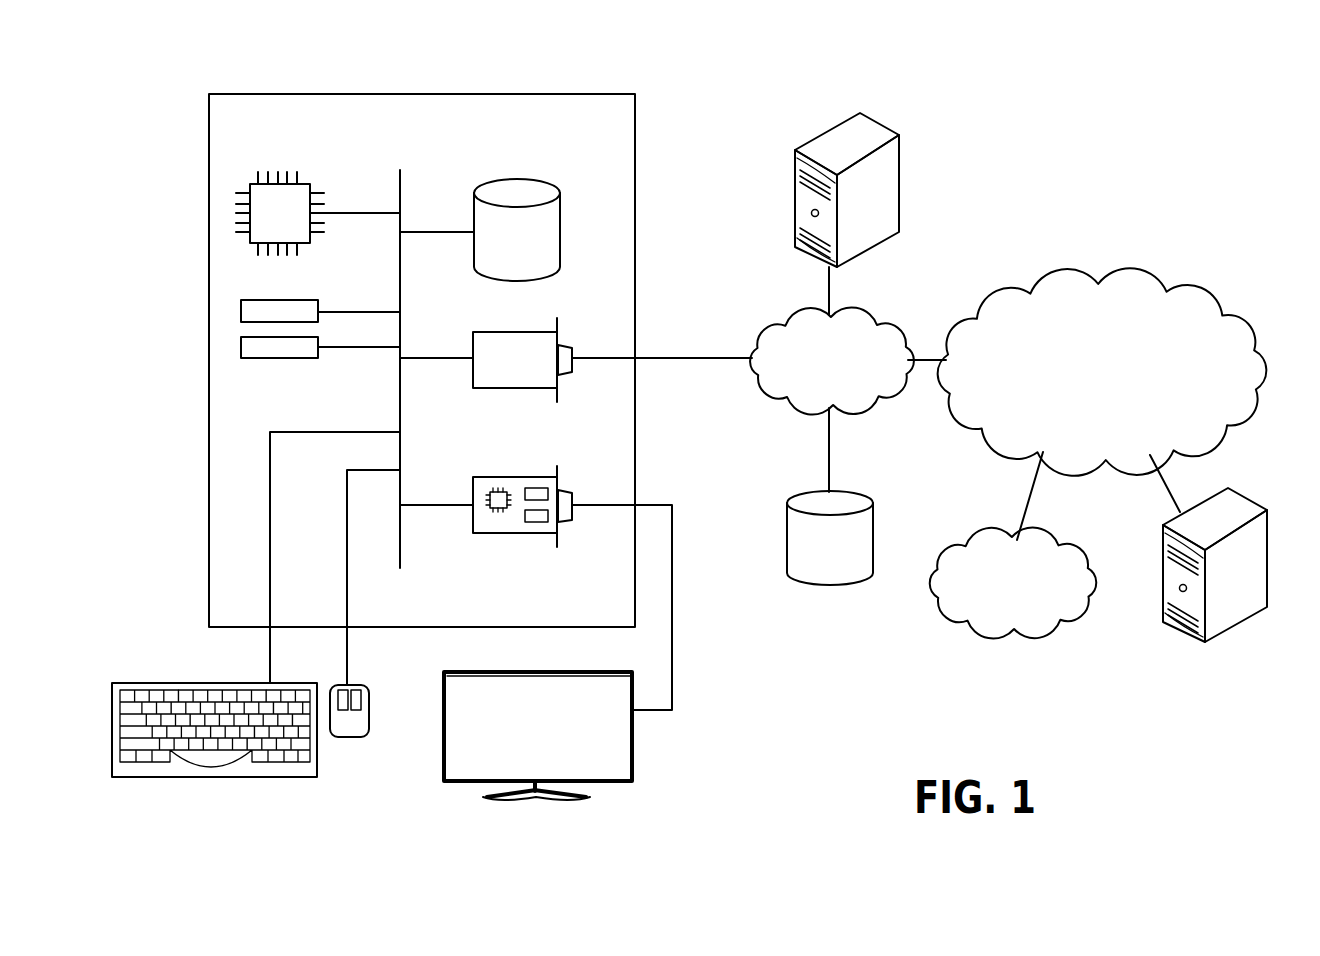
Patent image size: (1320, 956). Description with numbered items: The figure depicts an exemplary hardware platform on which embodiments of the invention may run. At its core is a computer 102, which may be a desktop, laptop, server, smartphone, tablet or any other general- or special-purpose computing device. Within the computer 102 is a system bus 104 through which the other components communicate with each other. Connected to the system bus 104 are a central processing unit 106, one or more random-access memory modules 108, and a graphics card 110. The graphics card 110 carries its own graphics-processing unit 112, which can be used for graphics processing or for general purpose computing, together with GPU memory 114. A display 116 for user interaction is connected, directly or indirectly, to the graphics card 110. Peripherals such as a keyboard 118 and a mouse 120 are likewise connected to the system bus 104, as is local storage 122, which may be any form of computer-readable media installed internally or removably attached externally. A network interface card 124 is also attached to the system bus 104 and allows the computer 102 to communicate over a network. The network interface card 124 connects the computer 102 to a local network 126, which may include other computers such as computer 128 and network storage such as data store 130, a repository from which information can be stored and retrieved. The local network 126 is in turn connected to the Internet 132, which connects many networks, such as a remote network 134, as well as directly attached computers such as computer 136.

The computer 102 is at (587, 94).
The system bus 104 is at (400, 183).
The central processing unit 106 is at (300, 180).
The random-access memory modules 108 is at (318, 347).
The graphics card 110 is at (513, 506).
The graphics-processing unit 112 is at (497, 506).
The GPU memory 114 is at (535, 523).
The display 116 is at (634, 764).
The keyboard 118 is at (217, 778).
The mouse 120 is at (347, 738).
The local storage 122 is at (562, 216).
The network interface card 124 is at (473, 344).
The local network 126 is at (887, 319).
The computer 128 is at (885, 130).
The data store 130 is at (862, 494).
The Internet 132 is at (1148, 281).
The remote network 134 is at (1068, 538).
The computer 136 is at (1245, 493).